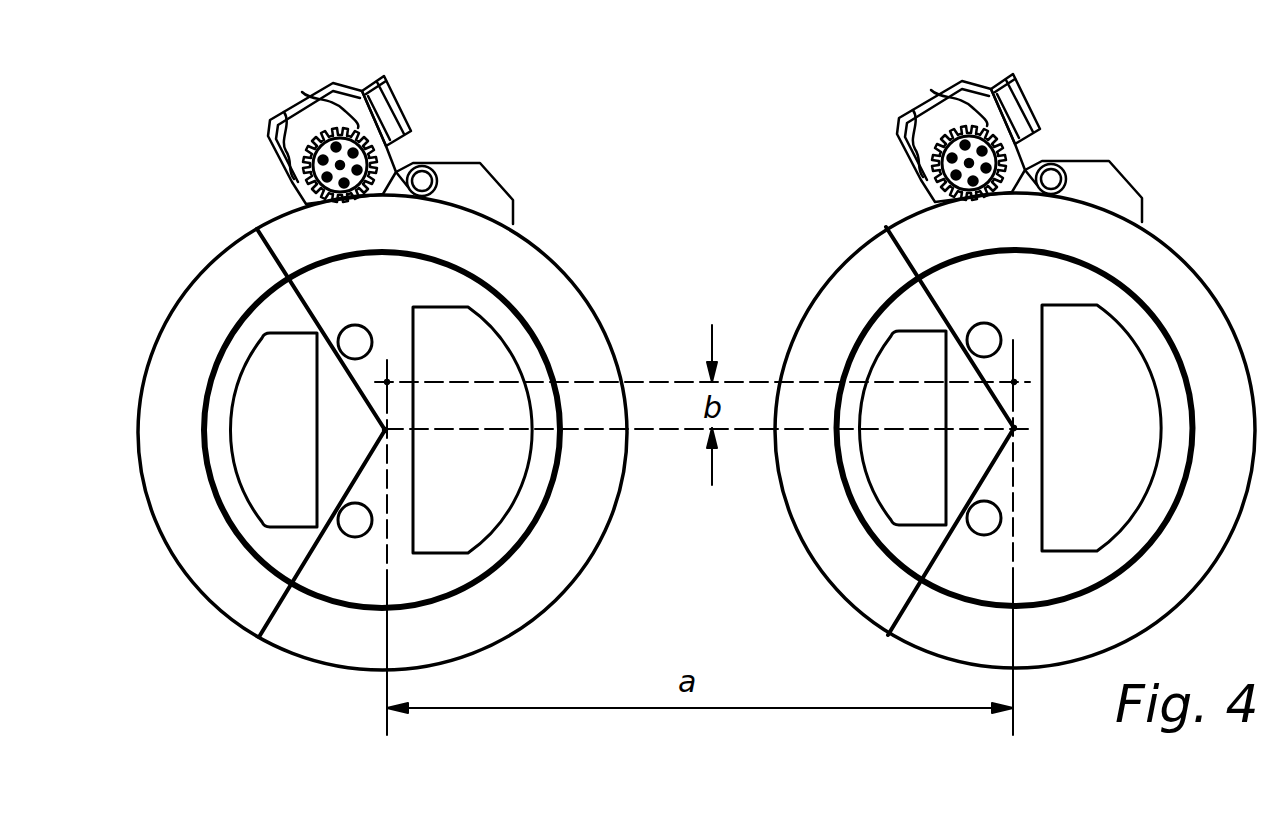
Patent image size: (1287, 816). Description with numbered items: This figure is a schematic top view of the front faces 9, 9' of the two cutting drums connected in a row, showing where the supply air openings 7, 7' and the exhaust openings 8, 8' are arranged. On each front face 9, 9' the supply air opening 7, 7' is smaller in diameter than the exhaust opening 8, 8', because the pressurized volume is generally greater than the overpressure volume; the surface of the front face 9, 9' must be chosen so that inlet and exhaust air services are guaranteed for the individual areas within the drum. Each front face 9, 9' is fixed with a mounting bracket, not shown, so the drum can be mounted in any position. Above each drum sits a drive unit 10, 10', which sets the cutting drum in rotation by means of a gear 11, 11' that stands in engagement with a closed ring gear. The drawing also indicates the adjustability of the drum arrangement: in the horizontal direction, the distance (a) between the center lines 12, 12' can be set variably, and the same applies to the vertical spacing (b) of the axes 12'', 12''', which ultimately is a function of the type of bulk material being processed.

The supply air opening 7 is at (853, 386).
The supply air opening 7' is at (241, 502).
The exhaust opening 8 is at (1154, 404).
The exhaust opening 8' is at (536, 437).
The front face 9 is at (1015, 417).
The front face 9' is at (385, 432).
The drive unit 10 is at (968, 114).
The drive unit 10' is at (339, 117).
The gear 11 is at (1085, 164).
The gear 11' is at (453, 166).
The center line 12 is at (1068, 411).
The center line 12' is at (354, 434).
The axis 12'' is at (1070, 360).
The axis 12''' is at (445, 361).